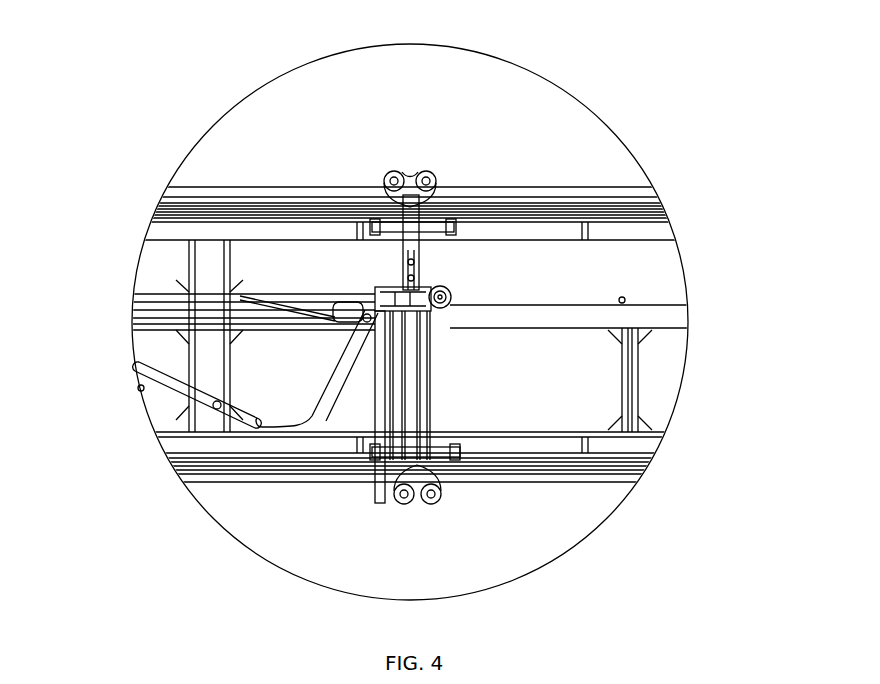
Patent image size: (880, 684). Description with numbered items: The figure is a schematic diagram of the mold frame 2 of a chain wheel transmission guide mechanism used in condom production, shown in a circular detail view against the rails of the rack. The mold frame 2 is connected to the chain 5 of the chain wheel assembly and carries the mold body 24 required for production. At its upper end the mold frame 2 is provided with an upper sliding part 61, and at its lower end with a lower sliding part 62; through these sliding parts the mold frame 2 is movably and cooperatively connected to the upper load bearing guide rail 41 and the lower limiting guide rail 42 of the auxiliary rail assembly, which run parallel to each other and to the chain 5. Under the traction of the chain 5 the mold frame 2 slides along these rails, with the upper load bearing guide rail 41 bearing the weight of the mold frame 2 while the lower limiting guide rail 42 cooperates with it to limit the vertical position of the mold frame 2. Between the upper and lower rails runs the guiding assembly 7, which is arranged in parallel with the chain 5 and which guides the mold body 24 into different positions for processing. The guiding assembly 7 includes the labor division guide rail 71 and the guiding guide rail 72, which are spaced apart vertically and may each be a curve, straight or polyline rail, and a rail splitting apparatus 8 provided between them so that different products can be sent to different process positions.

The mold frame 2 is at (448, 295).
The chain 5 is at (432, 227).
The guiding assembly 7 is at (643, 315).
The rail splitting apparatus 8 is at (240, 297).
The mold body 24 is at (377, 397).
The upper load bearing guide rail 41 is at (188, 192).
The lower limiting guide rail 42 is at (622, 478).
The upper sliding part 61 is at (443, 177).
The lower sliding part 62 is at (408, 497).
The labor division guide rail 71 is at (134, 294).
The guiding guide rail 72 is at (143, 394).